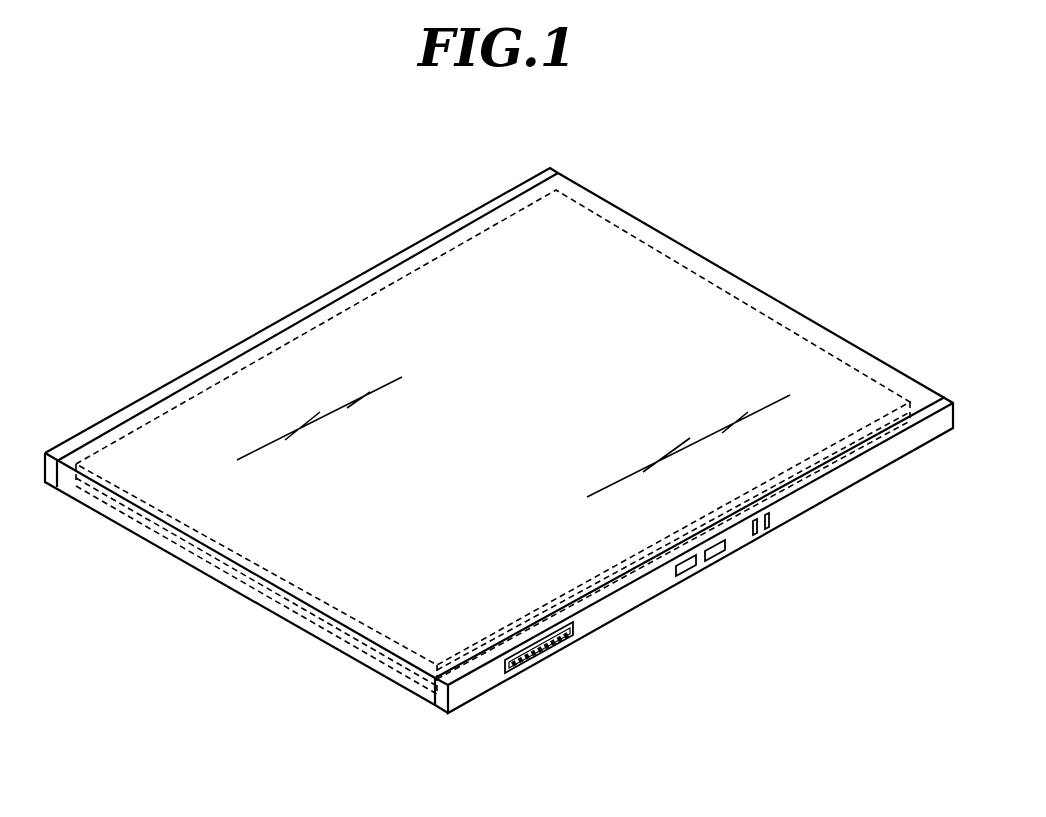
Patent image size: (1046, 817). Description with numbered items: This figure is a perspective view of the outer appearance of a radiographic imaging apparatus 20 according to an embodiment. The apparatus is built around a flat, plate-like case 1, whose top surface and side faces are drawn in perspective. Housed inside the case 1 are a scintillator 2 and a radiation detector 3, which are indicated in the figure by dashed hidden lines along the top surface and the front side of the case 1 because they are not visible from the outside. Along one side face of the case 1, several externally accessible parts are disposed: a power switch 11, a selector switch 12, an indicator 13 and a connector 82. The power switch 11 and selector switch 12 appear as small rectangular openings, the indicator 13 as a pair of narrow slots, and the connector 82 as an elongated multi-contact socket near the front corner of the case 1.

The case 1 is at (246, 340).
The radiographic imaging apparatus 20 is at (652, 214).
The scintillator 2 is at (357, 628).
The radiation detector 3 is at (390, 665).
The power switch 11 is at (689, 577).
The selector switch 12 is at (722, 560).
The indicator 13 is at (769, 528).
The connector 82 is at (573, 640).